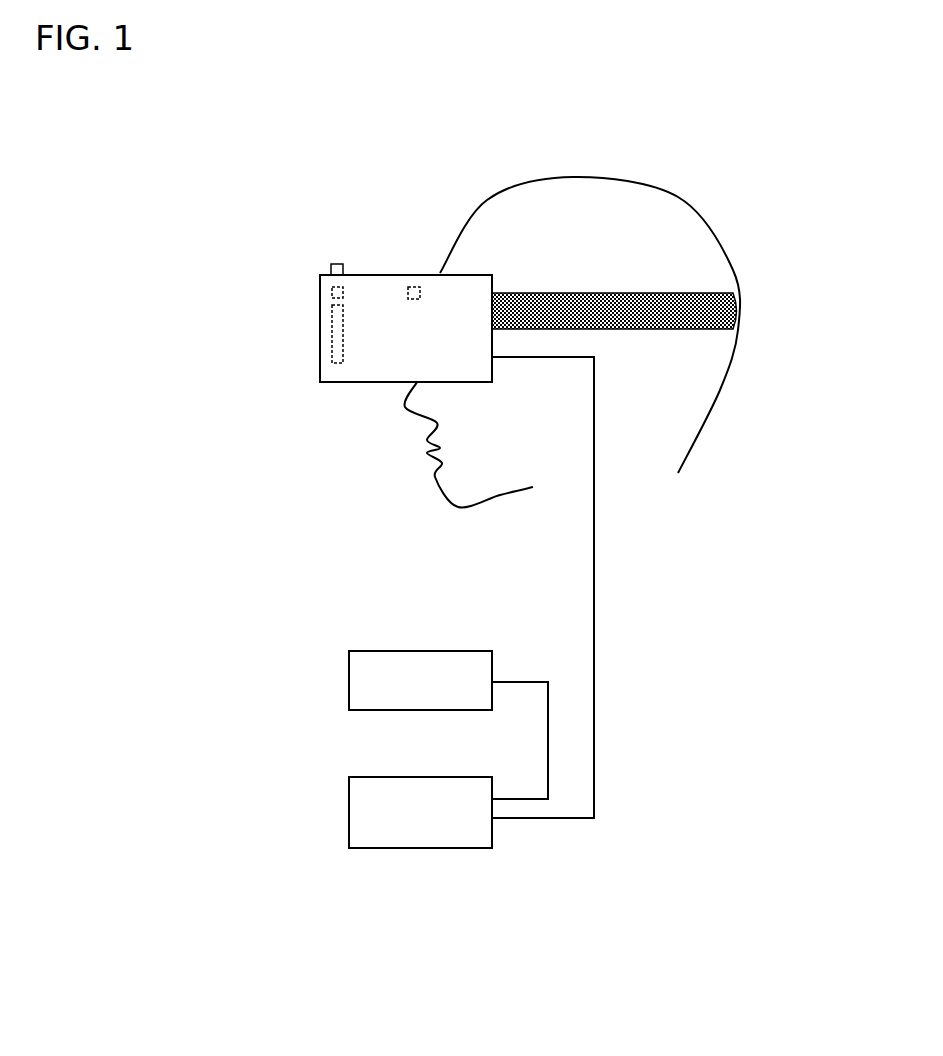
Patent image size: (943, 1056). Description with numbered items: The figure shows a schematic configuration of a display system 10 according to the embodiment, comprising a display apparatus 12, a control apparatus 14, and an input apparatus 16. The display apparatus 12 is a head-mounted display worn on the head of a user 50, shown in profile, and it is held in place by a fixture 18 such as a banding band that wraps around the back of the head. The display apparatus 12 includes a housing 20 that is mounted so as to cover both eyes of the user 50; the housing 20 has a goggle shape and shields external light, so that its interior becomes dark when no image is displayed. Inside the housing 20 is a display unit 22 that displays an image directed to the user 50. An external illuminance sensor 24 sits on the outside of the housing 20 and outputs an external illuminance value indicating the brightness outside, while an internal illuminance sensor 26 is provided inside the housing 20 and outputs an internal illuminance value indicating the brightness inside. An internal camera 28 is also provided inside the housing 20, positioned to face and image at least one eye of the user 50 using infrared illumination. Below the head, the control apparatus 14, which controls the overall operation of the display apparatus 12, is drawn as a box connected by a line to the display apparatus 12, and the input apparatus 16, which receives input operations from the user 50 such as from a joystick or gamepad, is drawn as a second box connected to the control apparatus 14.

The display system 10 is at (330, 162).
The display apparatus 12 is at (373, 266).
The control apparatus 14 is at (427, 777).
The input apparatus 16 is at (420, 651).
The fixture 18 is at (740, 313).
The housing 20 is at (358, 382).
The display unit 22 is at (332, 338).
The external illuminance sensor 24 is at (331, 268).
The internal illuminance sensor 26 is at (412, 287).
The internal camera 28 is at (332, 293).
The user 50 is at (582, 177).